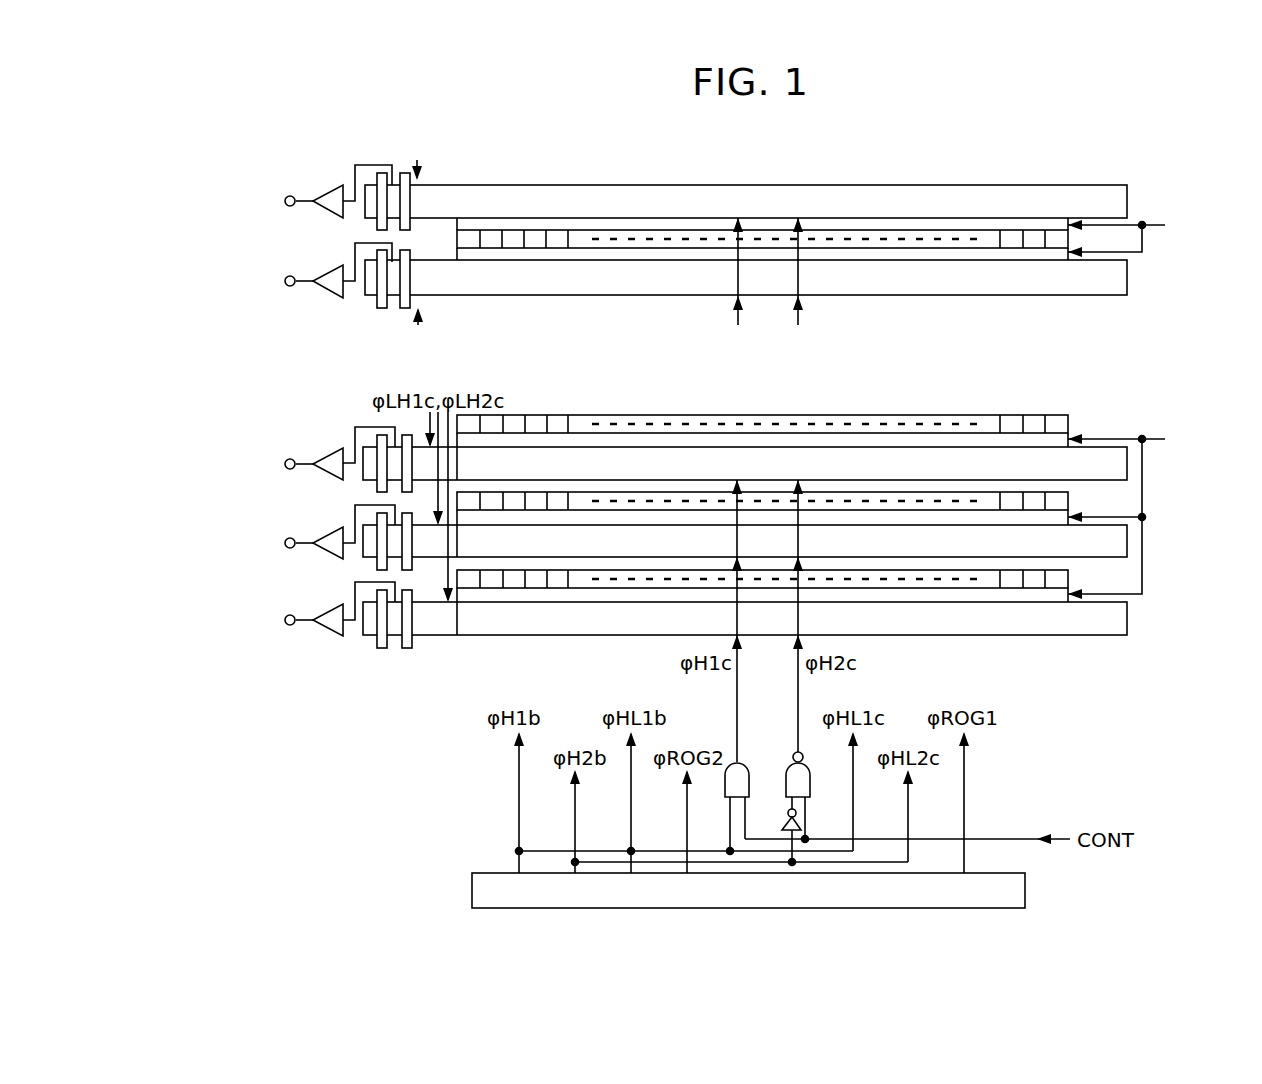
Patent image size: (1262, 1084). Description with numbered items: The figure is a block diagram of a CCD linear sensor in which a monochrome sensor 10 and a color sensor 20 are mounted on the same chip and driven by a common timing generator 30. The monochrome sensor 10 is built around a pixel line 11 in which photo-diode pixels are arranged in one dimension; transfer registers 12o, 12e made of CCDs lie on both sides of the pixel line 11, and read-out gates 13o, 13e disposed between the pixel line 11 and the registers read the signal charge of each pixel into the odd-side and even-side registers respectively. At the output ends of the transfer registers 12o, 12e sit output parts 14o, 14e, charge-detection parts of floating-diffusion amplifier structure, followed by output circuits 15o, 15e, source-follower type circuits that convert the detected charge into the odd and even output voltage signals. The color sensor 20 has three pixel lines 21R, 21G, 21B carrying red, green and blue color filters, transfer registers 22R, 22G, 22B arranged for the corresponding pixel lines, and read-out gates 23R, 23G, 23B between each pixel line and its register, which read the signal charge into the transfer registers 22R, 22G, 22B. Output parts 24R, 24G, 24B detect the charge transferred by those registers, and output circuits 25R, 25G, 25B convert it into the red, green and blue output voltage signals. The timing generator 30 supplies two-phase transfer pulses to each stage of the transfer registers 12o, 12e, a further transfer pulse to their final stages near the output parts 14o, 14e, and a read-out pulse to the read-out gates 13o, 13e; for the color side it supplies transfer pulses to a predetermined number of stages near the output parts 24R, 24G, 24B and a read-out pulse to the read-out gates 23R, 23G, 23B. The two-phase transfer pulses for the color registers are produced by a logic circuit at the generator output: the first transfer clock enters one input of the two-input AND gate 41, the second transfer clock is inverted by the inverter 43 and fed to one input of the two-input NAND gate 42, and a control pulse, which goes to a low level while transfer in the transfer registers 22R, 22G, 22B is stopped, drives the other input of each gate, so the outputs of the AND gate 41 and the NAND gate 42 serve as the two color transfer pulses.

The monochrome sensor 10 is at (804, 236).
The pixel line 11 is at (515, 240).
The transfer register 12o is at (573, 195).
The transfer register 12e is at (573, 287).
The read-out gate 13o is at (643, 227).
The read-out gate 13e is at (643, 255).
The output part 14o is at (358, 156).
The output part 14e is at (366, 302).
The output circuit 15o is at (330, 214).
The output circuit 15e is at (330, 294).
The color sensor 20 is at (803, 513).
The pixel line 21R is at (558, 428).
The transfer register 22R is at (615, 458).
The read-out gate 23R is at (678, 442).
The pixel line 21G is at (720, 497).
The transfer register 22G is at (805, 463).
The read-out gate 23G is at (902, 438).
The pixel line 21B is at (492, 582).
The transfer register 22B is at (565, 623).
The read-out gate 23B is at (627, 597).
The output part 24R is at (344, 429).
The output part 24G is at (344, 513).
The output part 24B is at (361, 646).
The output circuit 25R is at (335, 458).
The output circuit 25G is at (333, 557).
The output circuit 25B is at (333, 638).
The timing generator 30 is at (1027, 891).
The AND gate 41 is at (743, 780).
The NAND gate 42 is at (803, 780).
The inverter 43 is at (788, 813).